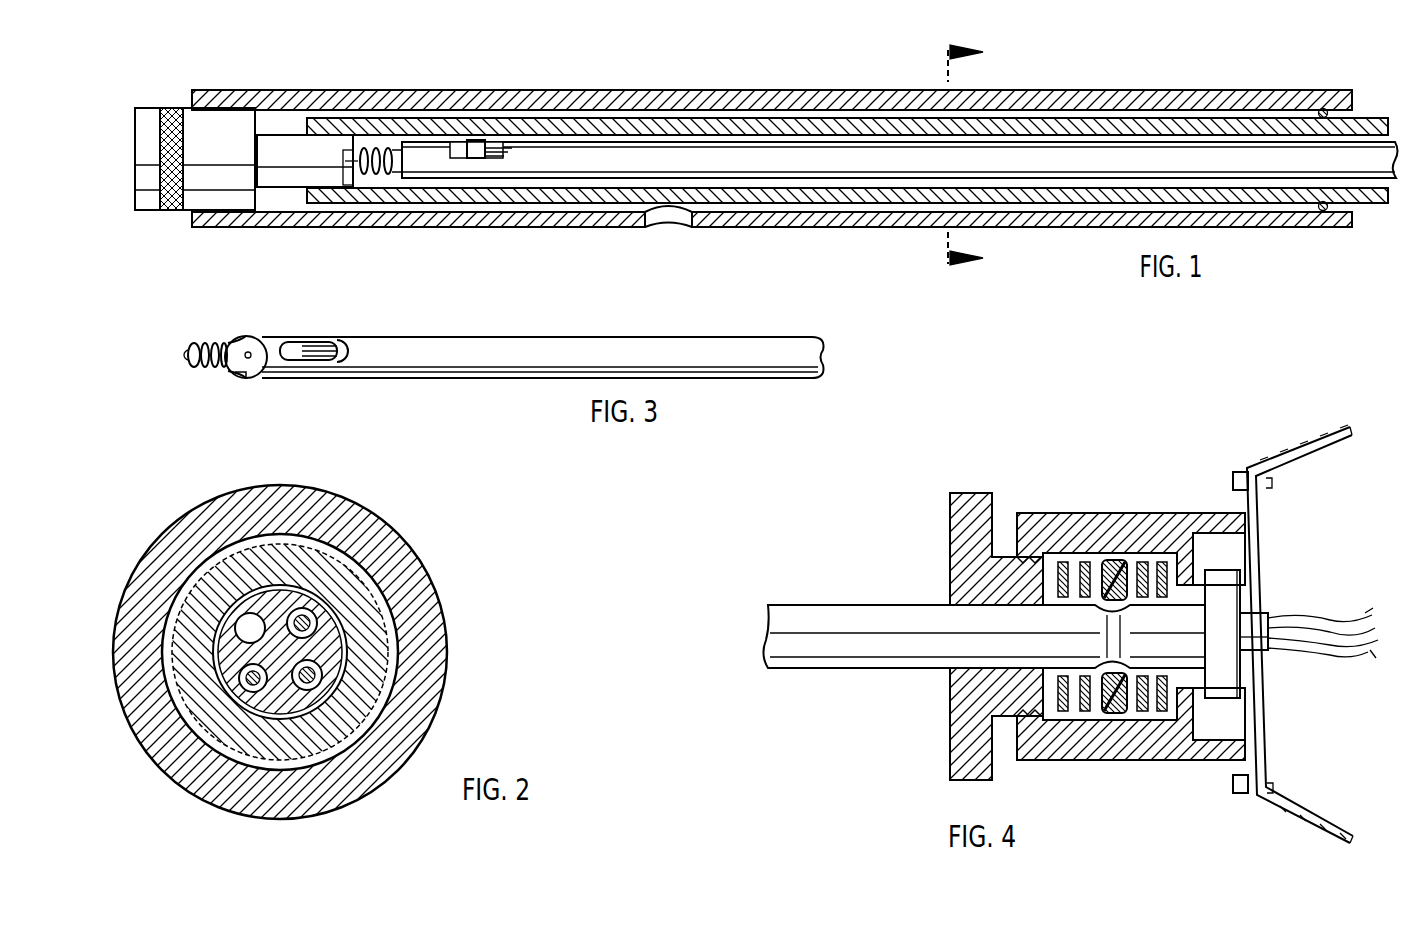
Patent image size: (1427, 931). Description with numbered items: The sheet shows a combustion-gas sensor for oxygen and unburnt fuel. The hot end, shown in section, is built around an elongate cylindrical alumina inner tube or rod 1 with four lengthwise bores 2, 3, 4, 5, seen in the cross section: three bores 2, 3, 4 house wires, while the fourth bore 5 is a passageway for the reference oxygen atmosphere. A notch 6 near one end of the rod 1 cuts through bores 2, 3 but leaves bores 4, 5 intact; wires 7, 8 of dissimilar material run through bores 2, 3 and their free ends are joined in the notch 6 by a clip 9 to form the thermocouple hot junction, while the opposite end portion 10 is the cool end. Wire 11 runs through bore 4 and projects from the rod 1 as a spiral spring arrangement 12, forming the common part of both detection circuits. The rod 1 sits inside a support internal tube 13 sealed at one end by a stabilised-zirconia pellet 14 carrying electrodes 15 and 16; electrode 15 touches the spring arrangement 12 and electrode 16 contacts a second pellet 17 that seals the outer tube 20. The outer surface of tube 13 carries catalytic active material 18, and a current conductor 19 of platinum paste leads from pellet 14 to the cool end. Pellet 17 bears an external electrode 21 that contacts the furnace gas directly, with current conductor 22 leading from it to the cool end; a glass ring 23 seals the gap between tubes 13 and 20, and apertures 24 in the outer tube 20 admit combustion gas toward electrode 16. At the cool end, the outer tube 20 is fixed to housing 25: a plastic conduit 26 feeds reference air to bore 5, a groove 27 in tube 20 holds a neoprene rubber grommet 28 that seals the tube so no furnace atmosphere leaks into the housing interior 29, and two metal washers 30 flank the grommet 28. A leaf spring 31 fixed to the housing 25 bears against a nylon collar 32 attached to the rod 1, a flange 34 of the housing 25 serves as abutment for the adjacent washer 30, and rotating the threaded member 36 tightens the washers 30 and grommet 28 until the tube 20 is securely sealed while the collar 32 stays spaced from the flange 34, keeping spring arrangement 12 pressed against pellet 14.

In FIG. 1, the inner tube or rod 1 is at (780, 160).
In FIG. 3, the inner tube or rod 1 is at (540, 347).
In FIG. 2, the inner tube or rod 1 is at (340, 652).
In FIG. 4, the inner tube or rod 1 is at (770, 625).
In FIG. 1, the bore 2 is at (965, 154).
In FIG. 2, the bore 2 is at (340, 790).
In FIG. 3, the bore 3 is at (240, 343).
In FIG. 2, the bore 3 is at (258, 690).
In FIG. 2, the bore 4 is at (302, 612).
In FIG. 3, the bore 5 is at (262, 350).
In FIG. 2, the bore 5 is at (248, 627).
In FIG. 1, the notch 6 is at (455, 147).
In FIG. 3, the notch 6 is at (341, 343).
In FIG. 1, the wire 7 is at (492, 160).
In FIG. 3, the wire 7 is at (330, 360).
In FIG. 2, the wire 7 is at (313, 673).
In FIG. 4, the wire 7 is at (1292, 650).
In FIG. 1, the wire 8 is at (495, 155).
In FIG. 3, the wire 8 is at (322, 345).
In FIG. 2, the wire 8 is at (257, 683).
In FIG. 4, the wire 8 is at (1338, 652).
In FIG. 1, the clip 9 is at (475, 141).
In FIG. 3, the clip 9 is at (295, 345).
In FIG. 1, the end portion 10 is at (1216, 155).
In FIG. 3, the end portion 10 is at (752, 350).
In FIG. 3, the wire 11 is at (240, 376).
In FIG. 2, the wire 11 is at (310, 622).
In FIG. 4, the wire 11 is at (1375, 642).
In FIG. 1, the spiral spring arrangement 12 is at (383, 152).
In FIG. 3, the spiral spring arrangement 12 is at (205, 370).
In FIG. 1, the support internal tube 13 is at (703, 128).
In FIG. 2, the support internal tube 13 is at (367, 663).
In FIG. 1, the pellet 14 is at (290, 150).
In FIG. 1, the electrode 15 is at (345, 155).
In FIG. 1, the electrode 16 is at (250, 146).
In FIG. 1, the pellet 17 is at (212, 118).
In FIG. 1, the catalytic active material 18 is at (620, 116).
In FIG. 1, the current conductor 19 is at (1130, 118).
In FIG. 2, the current conductor 19 is at (373, 700).
In FIG. 1, the outer tube 20 is at (864, 100).
In FIG. 2, the outer tube 20 is at (387, 520).
In FIG. 4, the outer tube 20 is at (868, 623).
In FIG. 1, the electrode 21 is at (158, 110).
In FIG. 1, the current conductor 22 is at (1045, 91).
In FIG. 1, the ring 23 is at (1320, 109).
In FIG. 1, the apertures 24 is at (668, 222).
In FIG. 4, the housing 25 is at (1170, 525).
In FIG. 4, the plastic conduit 26 is at (1323, 609).
In FIG. 4, the groove 27 is at (1115, 630).
In FIG. 4, the neoprene rubber grommet 28 is at (1113, 563).
In FIG. 4, the housing interior 29 is at (1344, 538).
In FIG. 4, the metal washers 30 is at (1085, 563).
In FIG. 4, the leaf spring 31 is at (1262, 512).
In FIG. 4, the nylon collar 32 is at (1222, 612).
In FIG. 4, the flange 34 is at (1200, 705).
In FIG. 4, the threaded member 36 is at (978, 510).